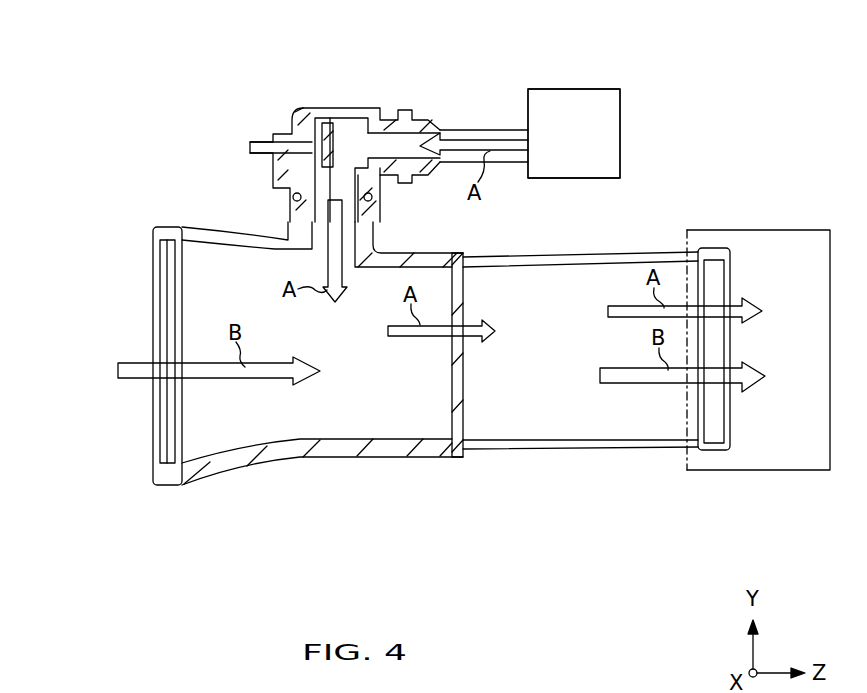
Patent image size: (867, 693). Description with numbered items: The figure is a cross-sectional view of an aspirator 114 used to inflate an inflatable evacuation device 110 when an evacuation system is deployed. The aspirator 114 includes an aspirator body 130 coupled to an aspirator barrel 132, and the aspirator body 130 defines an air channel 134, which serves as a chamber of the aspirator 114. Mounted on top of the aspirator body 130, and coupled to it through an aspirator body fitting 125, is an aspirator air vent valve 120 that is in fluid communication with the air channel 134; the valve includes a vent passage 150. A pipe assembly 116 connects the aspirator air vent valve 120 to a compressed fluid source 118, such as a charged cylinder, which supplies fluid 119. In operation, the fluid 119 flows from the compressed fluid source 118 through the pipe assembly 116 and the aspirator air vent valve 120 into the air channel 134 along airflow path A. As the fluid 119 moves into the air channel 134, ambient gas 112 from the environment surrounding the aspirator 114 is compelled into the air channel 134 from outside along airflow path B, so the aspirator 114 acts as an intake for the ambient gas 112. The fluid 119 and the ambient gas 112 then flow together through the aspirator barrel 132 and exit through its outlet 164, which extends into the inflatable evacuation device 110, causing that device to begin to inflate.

The inflatable evacuation device 110 is at (818, 227).
The ambient gas 112 is at (100, 379).
The aspirator 114 is at (113, 162).
The pipe assembly 116 is at (507, 130).
The compressed fluid source 118 is at (600, 88).
The fluid 119 is at (593, 148).
The aspirator air vent valve 120 is at (336, 107).
The aspirator body fitting 125 is at (372, 200).
The aspirator body 130 is at (227, 235).
The aspirator barrel 132 is at (577, 255).
The air channel 134 is at (280, 420).
The vent passage 150 is at (137, 273).
The outlet 164 is at (730, 303).